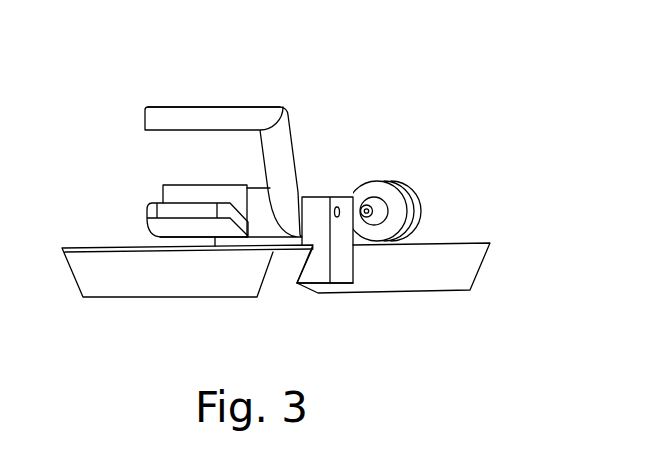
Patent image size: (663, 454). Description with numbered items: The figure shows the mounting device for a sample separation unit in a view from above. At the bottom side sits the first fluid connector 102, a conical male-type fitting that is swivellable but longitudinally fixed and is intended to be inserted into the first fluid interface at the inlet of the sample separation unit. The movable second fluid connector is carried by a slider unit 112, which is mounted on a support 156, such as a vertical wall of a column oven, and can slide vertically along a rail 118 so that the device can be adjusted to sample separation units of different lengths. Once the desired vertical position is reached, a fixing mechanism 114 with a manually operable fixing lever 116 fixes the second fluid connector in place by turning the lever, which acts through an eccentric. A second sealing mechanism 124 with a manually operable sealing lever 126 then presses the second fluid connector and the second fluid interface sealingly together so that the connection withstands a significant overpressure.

The first fluid connector 102 is at (369, 204).
The slider unit 112 is at (317, 198).
The fixing mechanism 114 is at (172, 107).
The fixing lever 116 is at (232, 112).
The rail 118 is at (318, 283).
The second sealing mechanism 124 is at (146, 216).
The sealing lever 126 is at (178, 211).
The support 156 is at (138, 280).